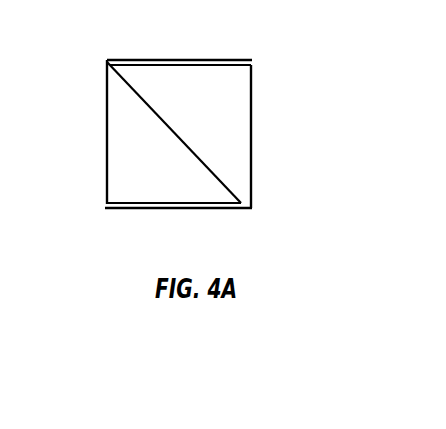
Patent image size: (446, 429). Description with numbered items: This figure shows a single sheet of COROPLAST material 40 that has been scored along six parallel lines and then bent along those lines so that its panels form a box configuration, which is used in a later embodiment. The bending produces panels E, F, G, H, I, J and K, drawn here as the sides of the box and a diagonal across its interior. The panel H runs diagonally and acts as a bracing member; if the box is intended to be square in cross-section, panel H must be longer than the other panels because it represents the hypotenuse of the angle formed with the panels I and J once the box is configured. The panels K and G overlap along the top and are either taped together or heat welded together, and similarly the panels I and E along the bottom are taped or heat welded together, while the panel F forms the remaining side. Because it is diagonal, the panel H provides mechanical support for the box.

The COROPLAST material 40 is at (65, 78).
The panel E is at (172, 232).
The panel F is at (273, 136).
The panel G is at (199, 41).
The panel H is at (204, 132).
The panel I is at (174, 230).
The panel J is at (84, 132).
The panel K is at (179, 39).